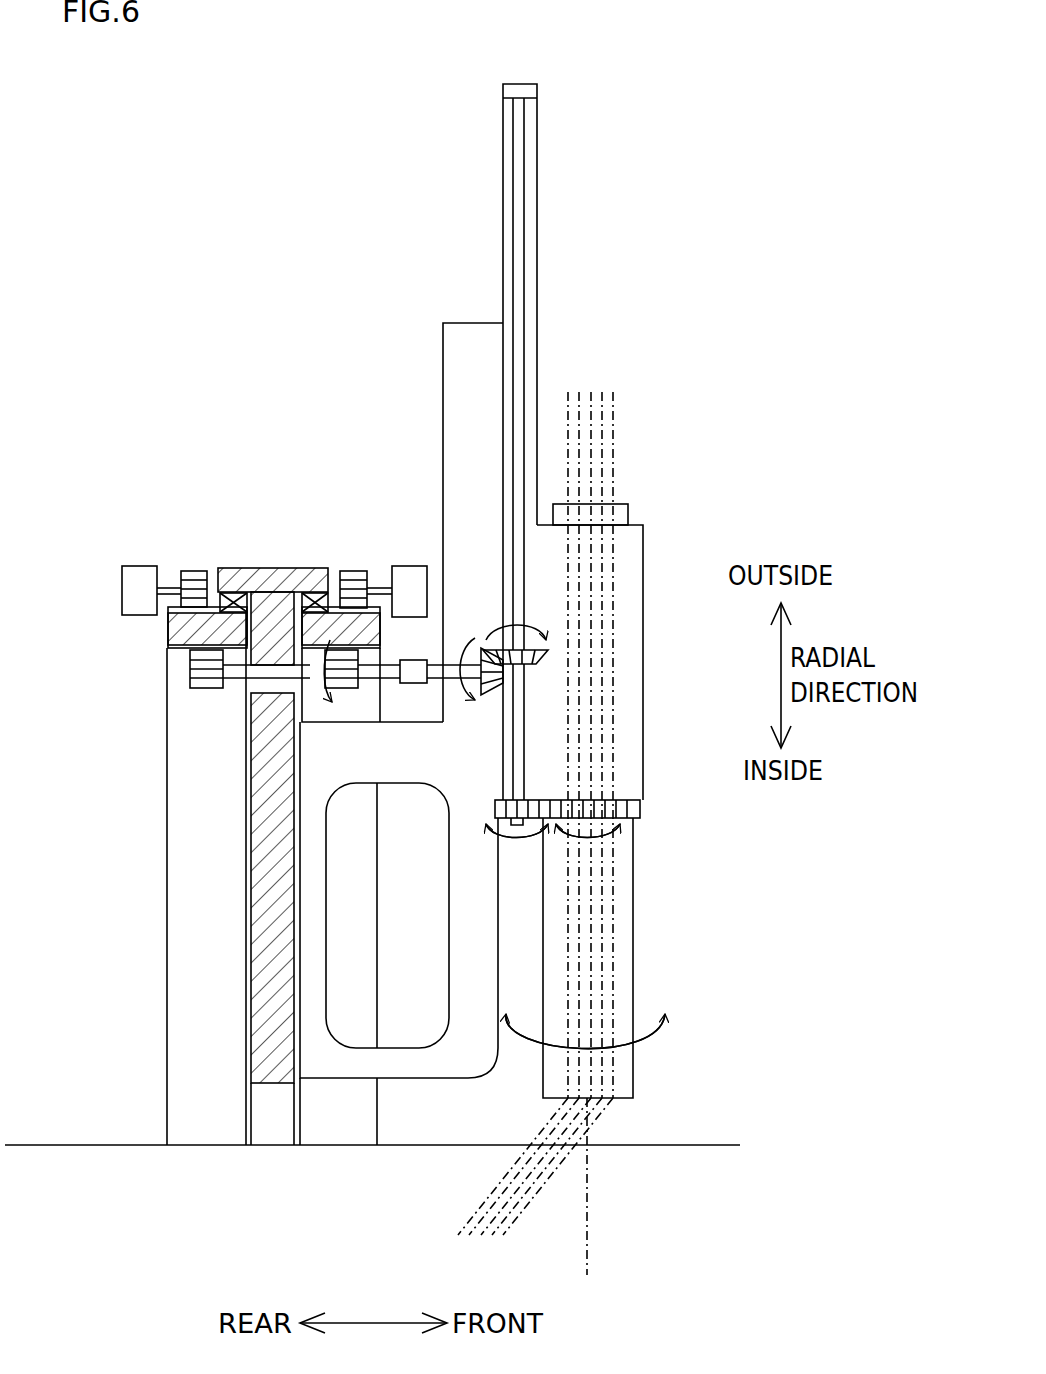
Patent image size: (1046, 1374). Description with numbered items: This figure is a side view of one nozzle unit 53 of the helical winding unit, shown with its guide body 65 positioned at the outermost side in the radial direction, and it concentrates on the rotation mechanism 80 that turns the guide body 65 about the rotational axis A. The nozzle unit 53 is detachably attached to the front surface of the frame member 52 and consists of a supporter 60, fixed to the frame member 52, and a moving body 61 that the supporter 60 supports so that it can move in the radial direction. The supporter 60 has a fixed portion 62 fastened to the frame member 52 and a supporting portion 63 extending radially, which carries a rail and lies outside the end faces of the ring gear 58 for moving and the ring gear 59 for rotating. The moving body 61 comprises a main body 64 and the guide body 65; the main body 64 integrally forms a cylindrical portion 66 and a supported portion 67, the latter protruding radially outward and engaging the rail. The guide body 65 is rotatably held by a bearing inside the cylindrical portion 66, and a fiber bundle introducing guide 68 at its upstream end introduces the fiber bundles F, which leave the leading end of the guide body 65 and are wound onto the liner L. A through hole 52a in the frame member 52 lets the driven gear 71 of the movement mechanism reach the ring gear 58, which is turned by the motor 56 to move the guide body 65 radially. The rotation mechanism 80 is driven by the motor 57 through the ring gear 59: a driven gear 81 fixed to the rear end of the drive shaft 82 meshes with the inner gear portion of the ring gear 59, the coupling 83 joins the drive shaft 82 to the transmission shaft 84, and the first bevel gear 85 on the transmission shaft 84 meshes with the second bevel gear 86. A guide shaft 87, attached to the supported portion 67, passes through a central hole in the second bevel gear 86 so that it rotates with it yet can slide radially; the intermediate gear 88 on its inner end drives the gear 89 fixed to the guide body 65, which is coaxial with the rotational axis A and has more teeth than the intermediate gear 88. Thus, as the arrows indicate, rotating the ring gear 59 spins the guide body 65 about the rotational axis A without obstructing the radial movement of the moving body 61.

The frame member 52 is at (260, 820).
The through hole 52a is at (270, 650).
The nozzle unit 53 is at (732, 145).
The motor 56 is at (140, 573).
The motor 57 is at (408, 573).
The ring gear 58 is at (208, 582).
The ring gear 59 is at (332, 615).
The supporter 60 is at (440, 352).
The moving body 61 is at (638, 346).
The fixed portion 62 is at (313, 874).
The supporting portion 63 is at (462, 408).
The main body 64 is at (655, 527).
The guide body 65 is at (652, 950).
The cylindrical portion 66 is at (628, 634).
The supported portion 67 is at (537, 187).
The fiber bundle introducing guide 68 is at (617, 512).
The driven gear 71 is at (200, 678).
The rotation mechanism 80 is at (473, 622).
The driven gear 81 is at (345, 690).
The drive shaft 82 is at (388, 682).
The coupling 83 is at (417, 686).
The transmission shaft 84 is at (470, 700).
The first bevel gear 85 is at (502, 676).
The second bevel gear 86 is at (540, 662).
The guide shaft 87 is at (518, 740).
The intermediate gear 88 is at (515, 824).
The gear 89 is at (640, 810).
The fiber bundles F is at (615, 402).
The liner L is at (33, 1163).
The rotational axis A is at (587, 1203).